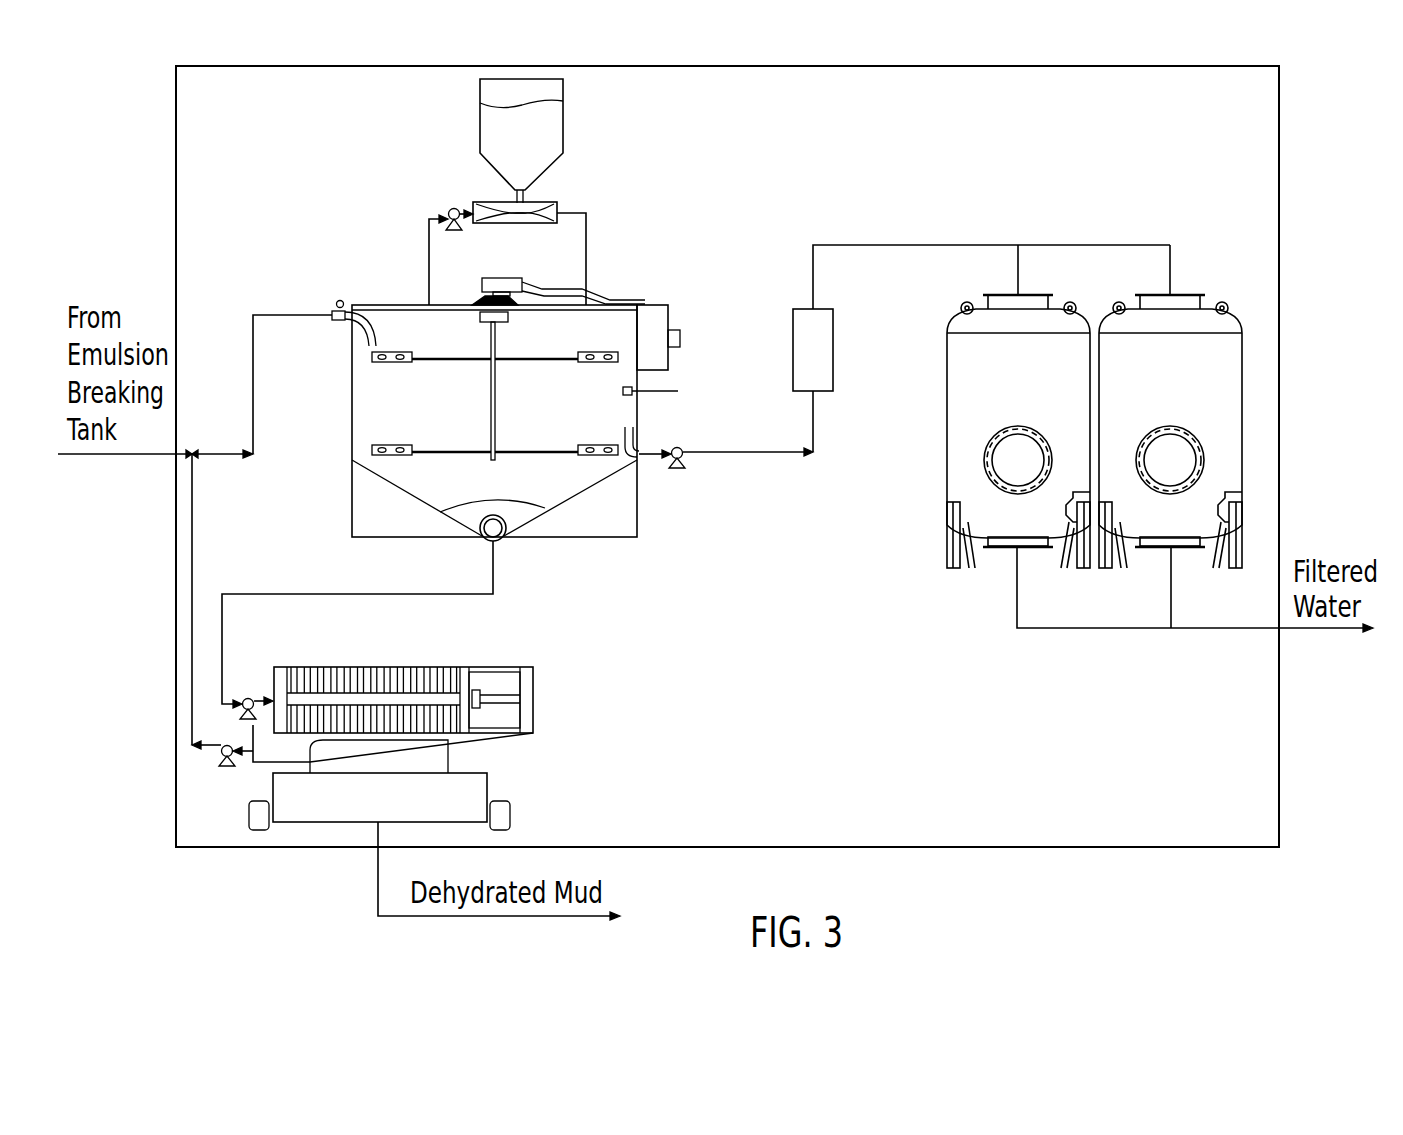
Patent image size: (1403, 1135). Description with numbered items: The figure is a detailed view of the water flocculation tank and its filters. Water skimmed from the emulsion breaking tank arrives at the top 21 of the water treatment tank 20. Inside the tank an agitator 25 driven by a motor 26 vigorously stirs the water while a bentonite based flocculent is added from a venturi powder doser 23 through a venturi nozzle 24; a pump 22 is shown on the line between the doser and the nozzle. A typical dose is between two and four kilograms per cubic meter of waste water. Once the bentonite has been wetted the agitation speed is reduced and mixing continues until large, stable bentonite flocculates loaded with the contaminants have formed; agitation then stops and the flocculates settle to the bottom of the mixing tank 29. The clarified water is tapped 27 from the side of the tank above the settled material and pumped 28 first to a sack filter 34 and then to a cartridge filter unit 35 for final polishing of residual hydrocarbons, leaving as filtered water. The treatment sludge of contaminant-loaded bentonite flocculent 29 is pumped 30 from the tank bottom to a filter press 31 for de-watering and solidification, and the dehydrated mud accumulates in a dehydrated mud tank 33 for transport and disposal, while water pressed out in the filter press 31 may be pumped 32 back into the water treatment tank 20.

The water treatment tank 20 is at (490, 421).
The top of water treatment tank 21 is at (323, 304).
The pump 22 is at (427, 192).
The venturi powder doser 23 is at (559, 141).
The venturi nozzle 24 is at (546, 190).
The agitator 25 is at (526, 352).
The motor 26 is at (596, 304).
The water tap 27 is at (656, 432).
The pump 28 is at (701, 471).
The bottom of mixing tank / contaminate loaded bentonite flocculent 29 is at (519, 546).
The pump 30 is at (274, 672).
The filter press 31 is at (448, 711).
The pump 32 is at (210, 781).
The dehydrated mud tank 33 is at (419, 797).
The sack filter 34 is at (792, 332).
The cartridge filter unit 35 is at (1064, 431).